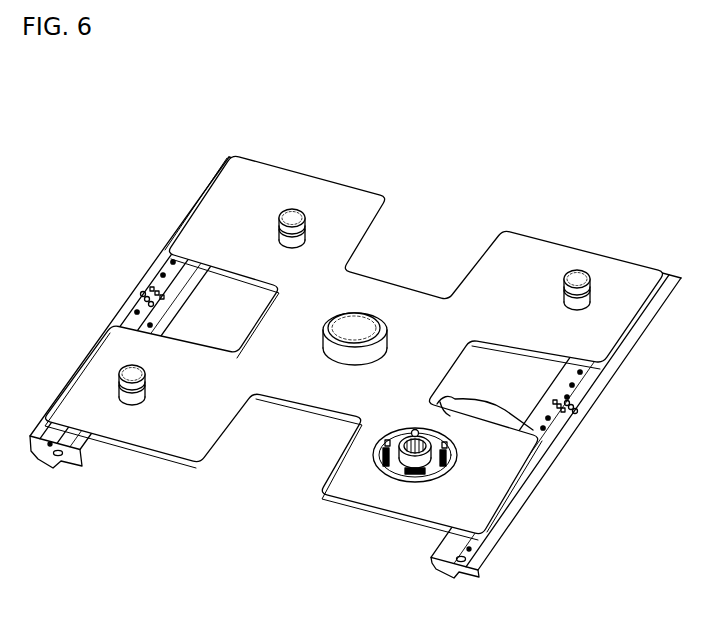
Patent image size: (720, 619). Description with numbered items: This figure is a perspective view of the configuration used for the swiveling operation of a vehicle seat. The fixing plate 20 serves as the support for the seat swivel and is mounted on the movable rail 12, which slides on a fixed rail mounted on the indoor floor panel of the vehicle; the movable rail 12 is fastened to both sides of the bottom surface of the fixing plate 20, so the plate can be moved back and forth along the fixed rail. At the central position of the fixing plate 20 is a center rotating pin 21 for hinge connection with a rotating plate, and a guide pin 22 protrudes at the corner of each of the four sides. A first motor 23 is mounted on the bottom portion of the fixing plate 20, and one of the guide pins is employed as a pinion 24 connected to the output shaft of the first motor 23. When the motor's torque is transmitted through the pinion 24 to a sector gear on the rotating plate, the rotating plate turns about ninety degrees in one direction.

The movable rail 12 is at (495, 528).
The fixing plate 20 is at (141, 447).
The center rotating pin 21 is at (355, 322).
The guide pin 22 is at (577, 277).
The first motor 23 is at (540, 421).
The pinion 24 is at (388, 473).